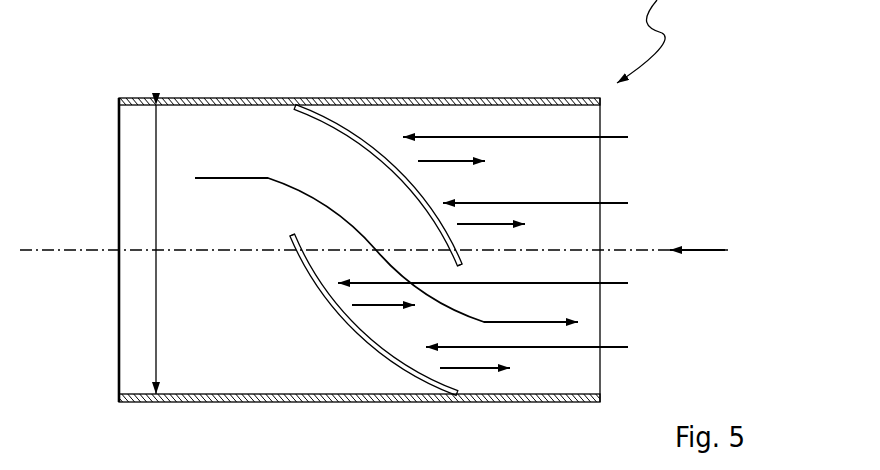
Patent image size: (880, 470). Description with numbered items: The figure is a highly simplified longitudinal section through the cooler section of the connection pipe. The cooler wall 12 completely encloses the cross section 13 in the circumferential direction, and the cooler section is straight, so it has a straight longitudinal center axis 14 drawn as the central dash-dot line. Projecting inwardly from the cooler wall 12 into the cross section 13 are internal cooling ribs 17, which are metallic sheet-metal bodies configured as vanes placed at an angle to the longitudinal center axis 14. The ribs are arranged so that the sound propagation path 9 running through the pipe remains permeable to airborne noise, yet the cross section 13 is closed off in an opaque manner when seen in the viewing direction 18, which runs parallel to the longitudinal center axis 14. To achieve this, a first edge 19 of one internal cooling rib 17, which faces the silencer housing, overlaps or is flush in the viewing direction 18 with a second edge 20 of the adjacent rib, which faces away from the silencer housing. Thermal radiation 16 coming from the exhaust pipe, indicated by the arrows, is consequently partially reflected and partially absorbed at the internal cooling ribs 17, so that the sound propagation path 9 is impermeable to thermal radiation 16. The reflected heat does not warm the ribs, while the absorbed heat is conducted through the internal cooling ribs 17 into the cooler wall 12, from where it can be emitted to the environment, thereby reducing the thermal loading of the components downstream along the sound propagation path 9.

The sound propagation path 9 is at (224, 178).
The cooler wall 12 is at (208, 98).
The cross section 13 is at (156, 187).
The longitudinal center axis 14 is at (52, 254).
The thermal radiation 16 is at (610, 138).
The internal cooling ribs 17 is at (380, 154).
The viewing direction 18 is at (705, 248).
The first edge 19 is at (288, 237).
The second edge 20 is at (463, 266).